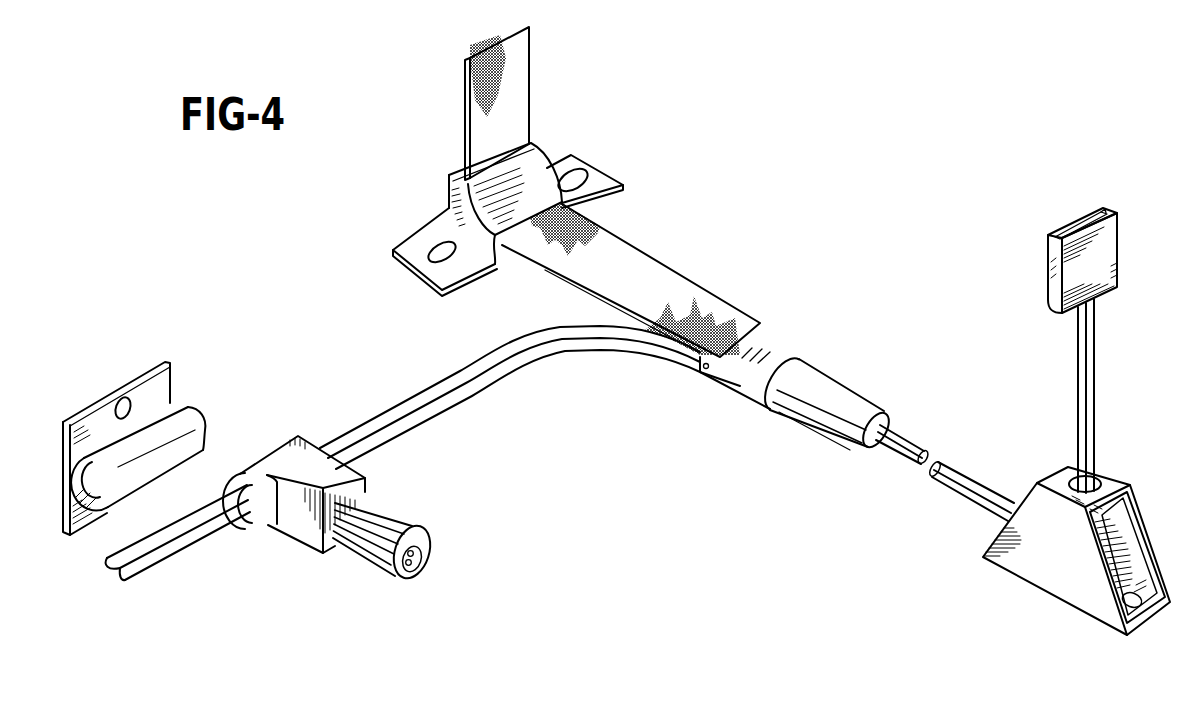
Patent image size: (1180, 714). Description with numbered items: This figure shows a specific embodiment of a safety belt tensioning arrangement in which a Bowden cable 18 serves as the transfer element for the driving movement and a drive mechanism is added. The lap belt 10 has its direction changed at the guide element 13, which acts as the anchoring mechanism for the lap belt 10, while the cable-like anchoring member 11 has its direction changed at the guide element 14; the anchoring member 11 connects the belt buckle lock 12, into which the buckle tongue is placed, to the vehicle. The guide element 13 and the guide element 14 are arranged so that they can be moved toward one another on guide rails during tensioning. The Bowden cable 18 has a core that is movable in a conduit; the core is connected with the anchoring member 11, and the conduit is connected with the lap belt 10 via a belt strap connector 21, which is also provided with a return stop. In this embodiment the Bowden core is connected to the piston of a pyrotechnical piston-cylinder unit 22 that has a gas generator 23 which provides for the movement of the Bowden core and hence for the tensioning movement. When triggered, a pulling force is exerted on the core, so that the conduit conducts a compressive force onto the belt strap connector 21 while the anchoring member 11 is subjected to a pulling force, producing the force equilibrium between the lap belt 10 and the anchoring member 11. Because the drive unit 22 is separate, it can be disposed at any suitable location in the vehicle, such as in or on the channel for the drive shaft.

The lap belt 10 is at (518, 55).
The anchoring member 11 is at (1090, 357).
The belt buckle lock 12 is at (1108, 243).
The guide element 13 is at (532, 163).
The guide element 14 is at (1043, 575).
The Bowden cable 18 is at (570, 354).
The belt strap connector 21 is at (820, 382).
The pyrotechnical piston-cylinder unit 22 is at (304, 538).
The gas generator 23 is at (394, 525).